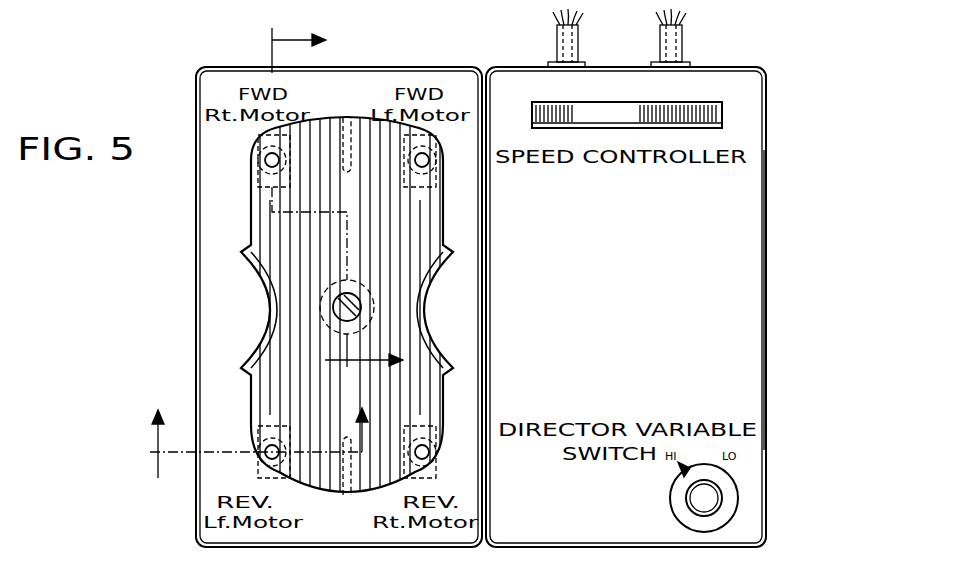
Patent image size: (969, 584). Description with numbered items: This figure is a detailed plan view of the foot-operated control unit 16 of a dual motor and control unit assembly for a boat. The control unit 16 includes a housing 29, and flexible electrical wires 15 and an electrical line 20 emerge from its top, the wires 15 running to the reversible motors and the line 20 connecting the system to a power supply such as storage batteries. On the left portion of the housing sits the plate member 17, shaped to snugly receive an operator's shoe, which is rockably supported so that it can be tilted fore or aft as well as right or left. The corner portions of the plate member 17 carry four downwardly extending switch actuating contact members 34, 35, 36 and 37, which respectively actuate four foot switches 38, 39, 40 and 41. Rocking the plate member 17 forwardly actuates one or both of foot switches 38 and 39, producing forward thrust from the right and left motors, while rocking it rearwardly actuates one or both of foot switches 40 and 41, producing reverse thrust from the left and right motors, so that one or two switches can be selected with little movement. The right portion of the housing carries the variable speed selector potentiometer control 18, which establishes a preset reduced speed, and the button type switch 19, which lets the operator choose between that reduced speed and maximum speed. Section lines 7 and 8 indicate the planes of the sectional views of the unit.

The section line 7- 7 is at (262, 472).
The section line 8- 8 is at (317, 204).
The electrical wires 15 is at (684, 40).
The control unit 16 is at (782, 262).
The plate member 17 is at (260, 303).
The variable speed selector potentiometer control 18 is at (722, 110).
The button type switch 19 is at (706, 498).
The electrical line 20 is at (557, 40).
The housing 29 is at (743, 368).
The switch actuating contact member 34 is at (258, 178).
The switch actuating contact member 35 is at (436, 178).
The switch actuating contact member 36 is at (258, 442).
The switch actuating contact member 37 is at (436, 442).
The foot switch 38 is at (258, 137).
The foot switch 39 is at (436, 137).
The foot switch 40 is at (258, 477).
The foot switch 41 is at (436, 477).